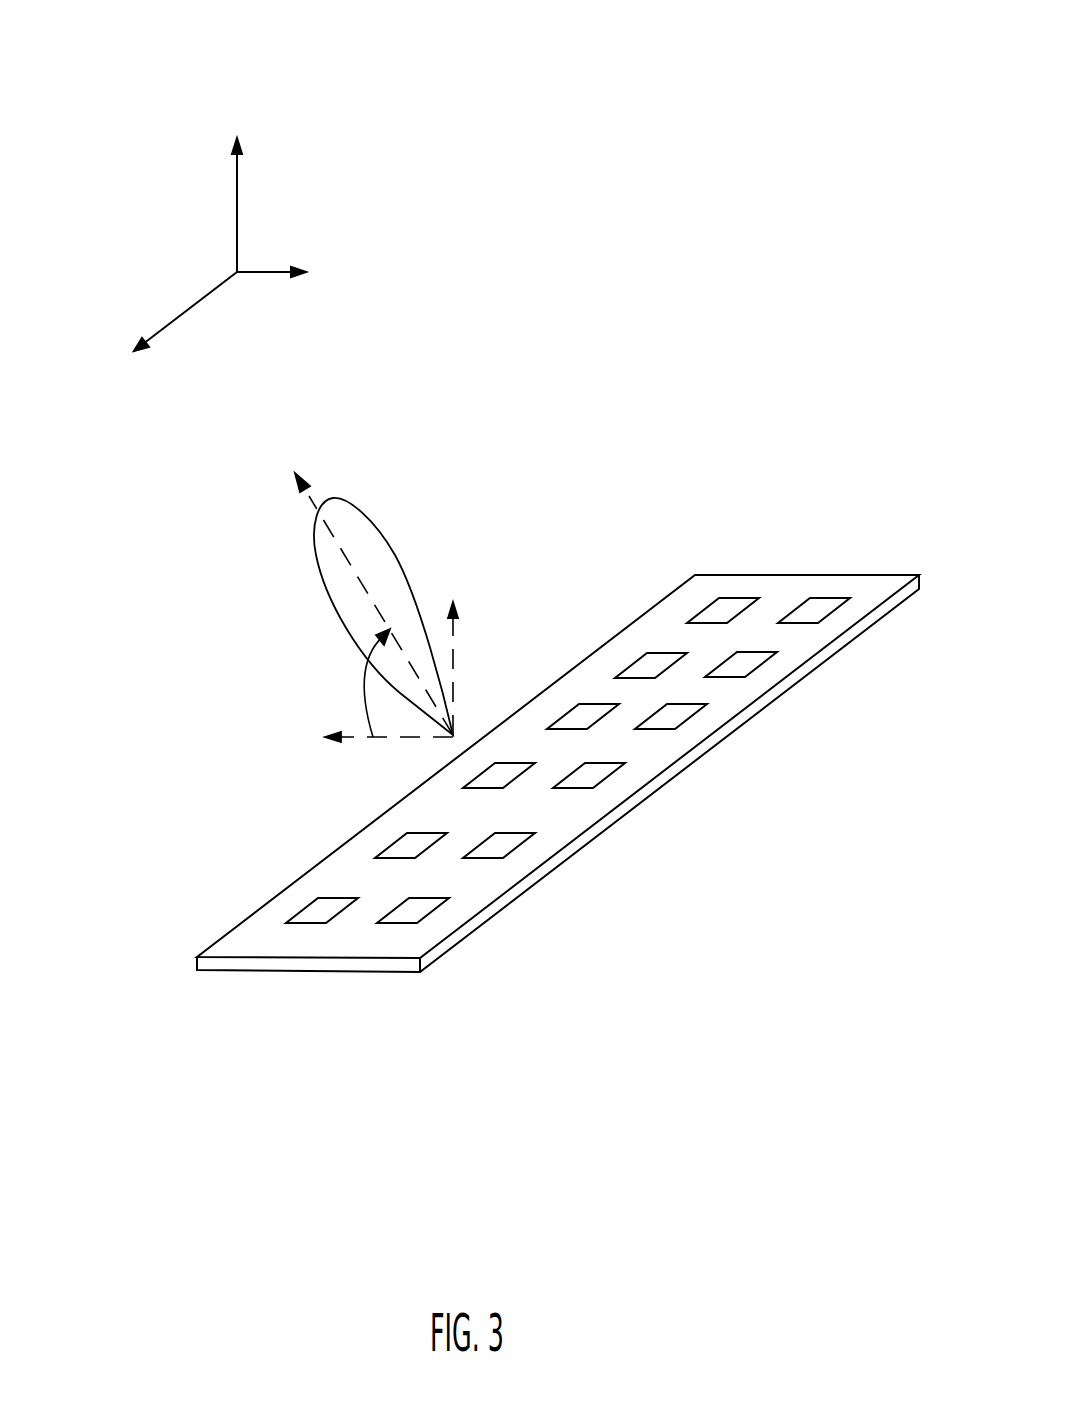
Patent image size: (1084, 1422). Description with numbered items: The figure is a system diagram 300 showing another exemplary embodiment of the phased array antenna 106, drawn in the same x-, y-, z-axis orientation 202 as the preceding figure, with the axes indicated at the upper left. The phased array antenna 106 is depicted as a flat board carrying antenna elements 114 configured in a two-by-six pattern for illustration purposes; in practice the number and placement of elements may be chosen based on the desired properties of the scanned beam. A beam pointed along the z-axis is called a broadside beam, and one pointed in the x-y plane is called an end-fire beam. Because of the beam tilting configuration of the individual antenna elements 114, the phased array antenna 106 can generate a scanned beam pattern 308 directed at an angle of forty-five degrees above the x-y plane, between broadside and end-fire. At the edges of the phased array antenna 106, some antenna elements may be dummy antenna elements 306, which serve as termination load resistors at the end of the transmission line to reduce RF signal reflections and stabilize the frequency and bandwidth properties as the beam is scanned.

The system diagram 300 is at (531, 31).
The coordinate system 202 is at (158, 188).
The scanned beam pattern 308 is at (318, 577).
The phased array antenna 106 is at (230, 928).
The antenna elements 114 is at (658, 651).
The dummy antenna elements 306 is at (835, 595).